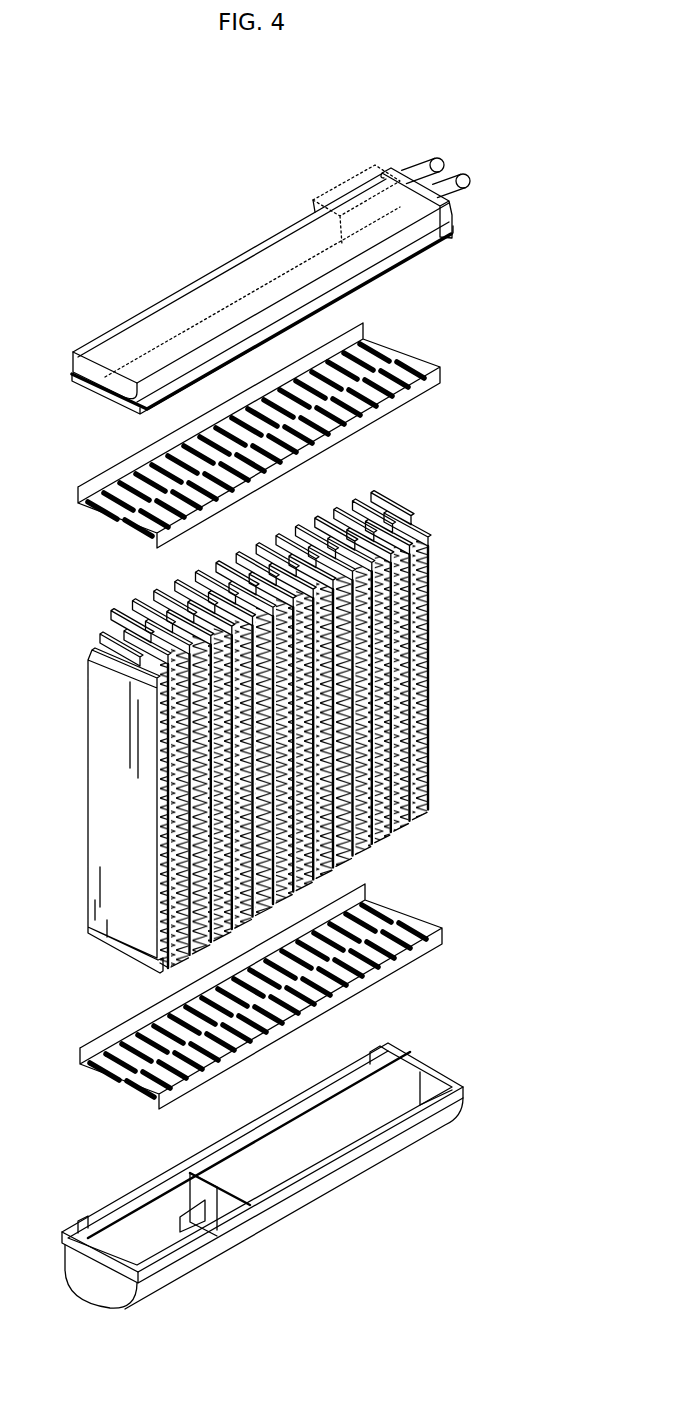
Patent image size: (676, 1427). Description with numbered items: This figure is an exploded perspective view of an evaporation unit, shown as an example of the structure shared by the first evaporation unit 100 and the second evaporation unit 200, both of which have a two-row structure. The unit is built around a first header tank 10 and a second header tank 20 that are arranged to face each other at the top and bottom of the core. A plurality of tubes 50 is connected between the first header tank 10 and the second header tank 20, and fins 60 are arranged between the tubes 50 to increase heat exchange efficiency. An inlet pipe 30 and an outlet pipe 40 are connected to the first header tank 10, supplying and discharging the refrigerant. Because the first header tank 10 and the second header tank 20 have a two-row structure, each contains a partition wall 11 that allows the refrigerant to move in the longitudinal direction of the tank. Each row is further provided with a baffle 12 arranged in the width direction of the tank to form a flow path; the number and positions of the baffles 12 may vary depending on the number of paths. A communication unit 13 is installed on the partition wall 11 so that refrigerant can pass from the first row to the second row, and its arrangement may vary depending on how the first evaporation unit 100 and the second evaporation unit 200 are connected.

The first evaporation unit 100 is at (166, 133).
The second evaporation unit 200 is at (299, 705).
The first header tank 10 is at (460, 215).
The partition wall 11 is at (240, 260).
The baffle 12 is at (313, 197).
The communication unit 13 is at (188, 1220).
The second header tank 20 is at (448, 927).
The inlet pipe 30 is at (437, 161).
The outlet pipe 40 is at (468, 180).
The tubes 50 is at (430, 538).
The fins 60 is at (430, 594).